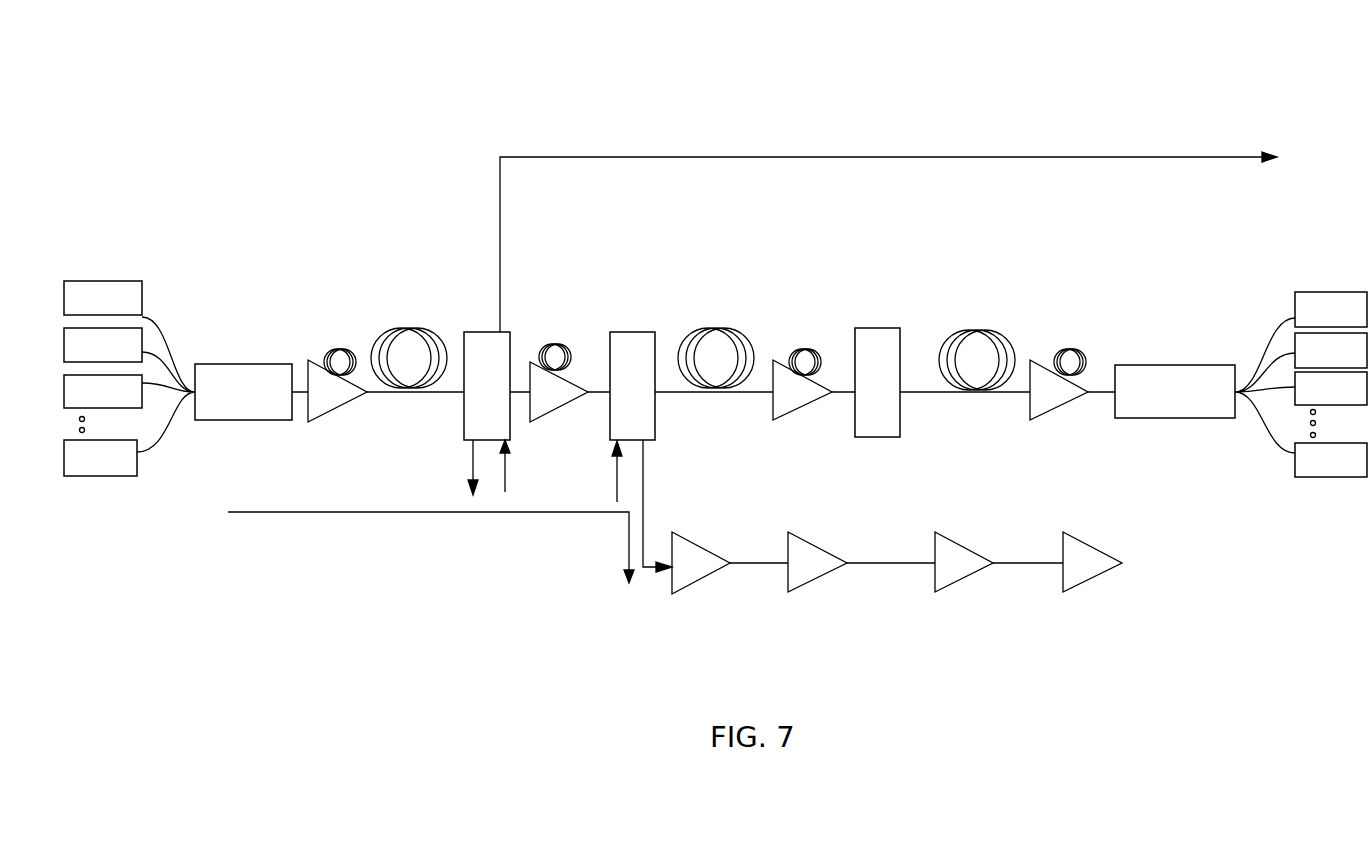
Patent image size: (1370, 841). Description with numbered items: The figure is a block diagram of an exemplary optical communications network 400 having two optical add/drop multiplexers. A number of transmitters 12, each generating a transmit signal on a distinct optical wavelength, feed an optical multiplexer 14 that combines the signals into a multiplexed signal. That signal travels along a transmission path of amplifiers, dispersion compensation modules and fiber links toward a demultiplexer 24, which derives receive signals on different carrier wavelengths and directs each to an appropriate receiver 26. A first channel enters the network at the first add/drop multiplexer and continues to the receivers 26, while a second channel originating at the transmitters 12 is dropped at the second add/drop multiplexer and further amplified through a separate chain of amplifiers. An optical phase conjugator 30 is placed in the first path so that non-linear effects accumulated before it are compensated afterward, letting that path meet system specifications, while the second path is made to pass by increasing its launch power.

The optical communications network 400 is at (777, 88).
The transmitters 12 is at (100, 476).
The optical multiplexer 14 is at (212, 420).
The optical phase conjugator 30 is at (897, 328).
The demultiplexer 24 is at (1183, 365).
The receivers 26 is at (1330, 292).